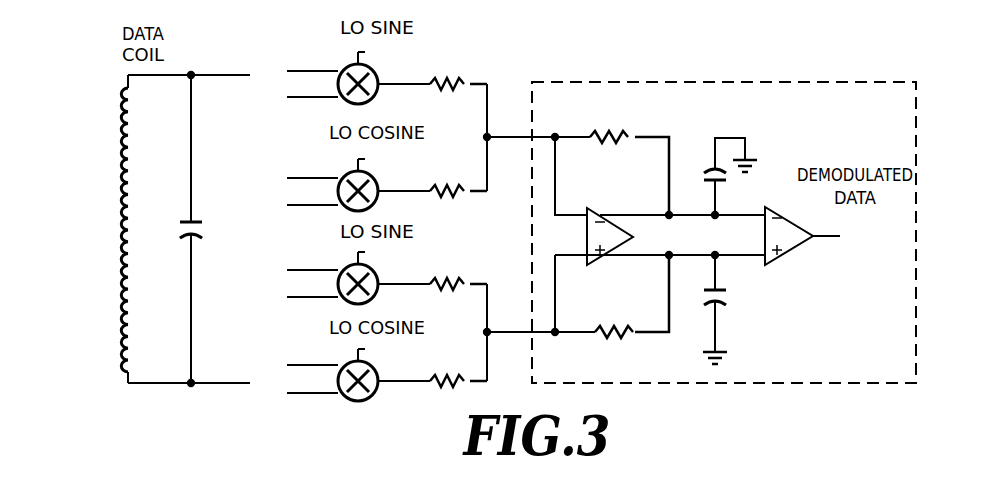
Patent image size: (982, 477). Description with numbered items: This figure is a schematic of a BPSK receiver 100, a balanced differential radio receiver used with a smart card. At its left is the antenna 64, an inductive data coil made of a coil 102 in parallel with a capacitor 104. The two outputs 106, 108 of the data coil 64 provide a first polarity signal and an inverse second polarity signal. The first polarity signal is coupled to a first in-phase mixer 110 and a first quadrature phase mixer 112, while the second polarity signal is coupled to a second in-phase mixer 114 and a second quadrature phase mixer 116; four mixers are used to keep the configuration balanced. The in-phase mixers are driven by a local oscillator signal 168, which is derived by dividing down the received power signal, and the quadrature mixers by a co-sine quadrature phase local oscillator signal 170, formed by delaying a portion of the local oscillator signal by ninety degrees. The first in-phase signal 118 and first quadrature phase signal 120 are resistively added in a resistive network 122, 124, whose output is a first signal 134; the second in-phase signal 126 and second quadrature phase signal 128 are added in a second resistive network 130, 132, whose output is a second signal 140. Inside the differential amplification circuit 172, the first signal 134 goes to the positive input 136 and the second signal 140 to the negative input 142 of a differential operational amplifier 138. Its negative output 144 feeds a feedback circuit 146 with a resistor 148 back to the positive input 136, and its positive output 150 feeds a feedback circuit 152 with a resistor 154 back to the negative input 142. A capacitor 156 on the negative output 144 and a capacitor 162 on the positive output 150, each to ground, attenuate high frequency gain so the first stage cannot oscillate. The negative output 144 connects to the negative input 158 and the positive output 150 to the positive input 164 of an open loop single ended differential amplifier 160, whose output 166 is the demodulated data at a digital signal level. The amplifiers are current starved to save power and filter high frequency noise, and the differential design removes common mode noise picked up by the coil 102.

The antenna 64 is at (86, 316).
The BPSK receiver 100 is at (640, 43).
The coil 102 is at (114, 134).
The capacitor 104 is at (193, 221).
The output 106 is at (203, 75).
The output 108 is at (219, 383).
The first in-phase mixer 110 is at (378, 75).
The first quadrature phase mixer 112 is at (375, 177).
The second in-phase mixer 114 is at (373, 298).
The second quadrature phase mixer 116 is at (363, 403).
The first in-phase signal 118 is at (393, 86).
The first quadrature phase signal 120 is at (412, 189).
The resistive network 122 is at (445, 75).
The resistive network 124 is at (472, 196).
The second in-phase signal 126 is at (382, 282).
The second quadrature phase signal 128 is at (418, 382).
The second resistive network 130 is at (448, 283).
The second resistive network 132 is at (453, 368).
The first signal 134 is at (514, 138).
The positive input 136 is at (565, 214).
The differential operational amplifier 138 is at (598, 212).
The second signal 140 is at (513, 336).
The negative input 142 is at (556, 292).
The negative output 144 is at (670, 218).
The feedback circuit 146 is at (633, 137).
The resistor 148 is at (596, 135).
The positive output 150 is at (635, 251).
The feedback circuit 152 is at (632, 338).
The resistor 154 is at (605, 345).
The capacitor 156 is at (703, 175).
The negative input 158 is at (746, 216).
The single ended differential amplifier 160 is at (784, 210).
The capacitor 162 is at (727, 306).
The positive input 164 is at (727, 258).
The output 166 is at (827, 236).
The local oscillator signal 168 is at (377, 154).
The quadrature phase local oscillator signal 170 is at (377, 256).
The differential amplification circuit 172 is at (774, 82).